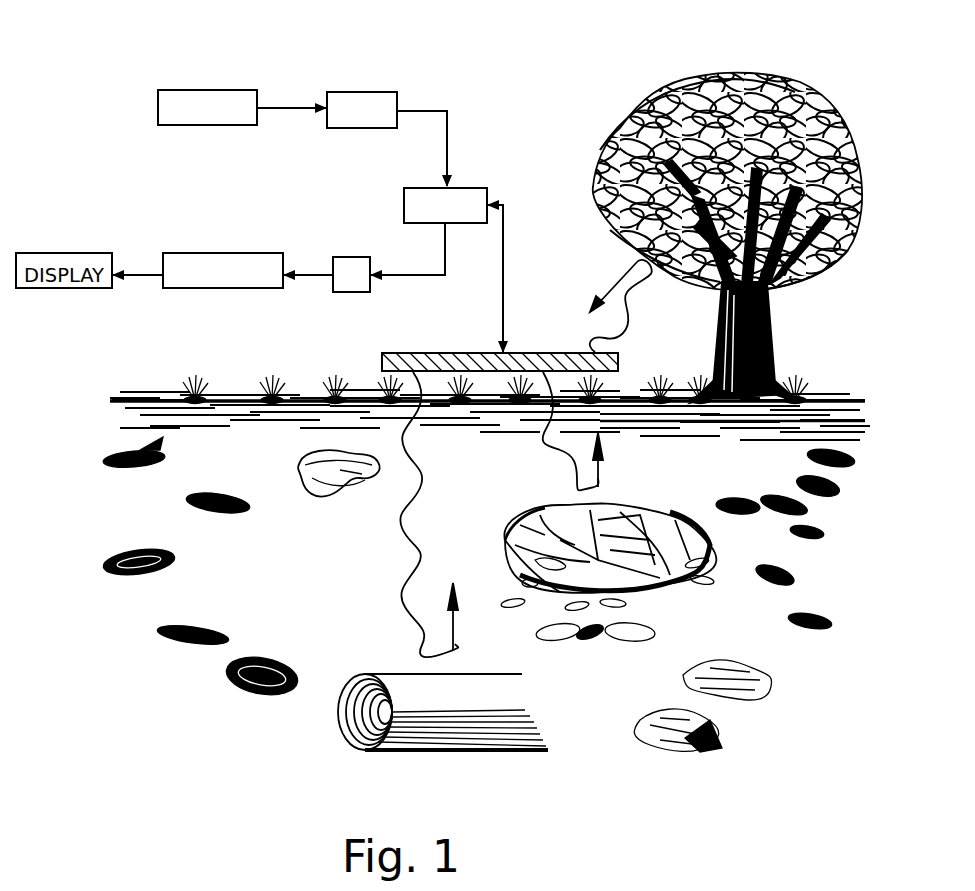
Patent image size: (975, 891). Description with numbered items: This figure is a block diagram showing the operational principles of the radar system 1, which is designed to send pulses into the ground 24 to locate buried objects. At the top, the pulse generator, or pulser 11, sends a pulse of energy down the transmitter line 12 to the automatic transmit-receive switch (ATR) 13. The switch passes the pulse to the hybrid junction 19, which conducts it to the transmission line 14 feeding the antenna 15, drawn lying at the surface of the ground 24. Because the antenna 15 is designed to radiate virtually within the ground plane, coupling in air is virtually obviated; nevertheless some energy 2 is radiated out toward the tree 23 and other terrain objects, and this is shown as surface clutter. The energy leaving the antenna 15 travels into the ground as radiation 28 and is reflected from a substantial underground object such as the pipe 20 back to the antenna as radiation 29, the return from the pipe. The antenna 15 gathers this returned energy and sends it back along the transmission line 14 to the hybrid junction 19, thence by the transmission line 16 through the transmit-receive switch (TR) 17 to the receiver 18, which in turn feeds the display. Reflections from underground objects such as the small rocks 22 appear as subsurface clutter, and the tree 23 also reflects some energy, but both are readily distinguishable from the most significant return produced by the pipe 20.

The radar system 1 is at (505, 156).
The energy 2 is at (636, 312).
The pulse generator (pulser) 11 is at (210, 90).
The transmitter line 12 is at (288, 107).
The automatic transmit-receive switch (ATR) 13 is at (356, 92).
The transmission line 14 is at (503, 286).
The antenna 15 is at (553, 353).
The transmission line 16 is at (428, 275).
The transmit-receive switch (TR) 17 is at (355, 257).
The receiver 18 is at (258, 253).
The hybrid junction 19 is at (404, 205).
The pipe 20 is at (445, 752).
The small rocks 22 is at (338, 497).
The tree 23 is at (680, 80).
The ground 24 is at (245, 482).
The radiation 28 is at (427, 468).
The radiation 29 is at (455, 648).